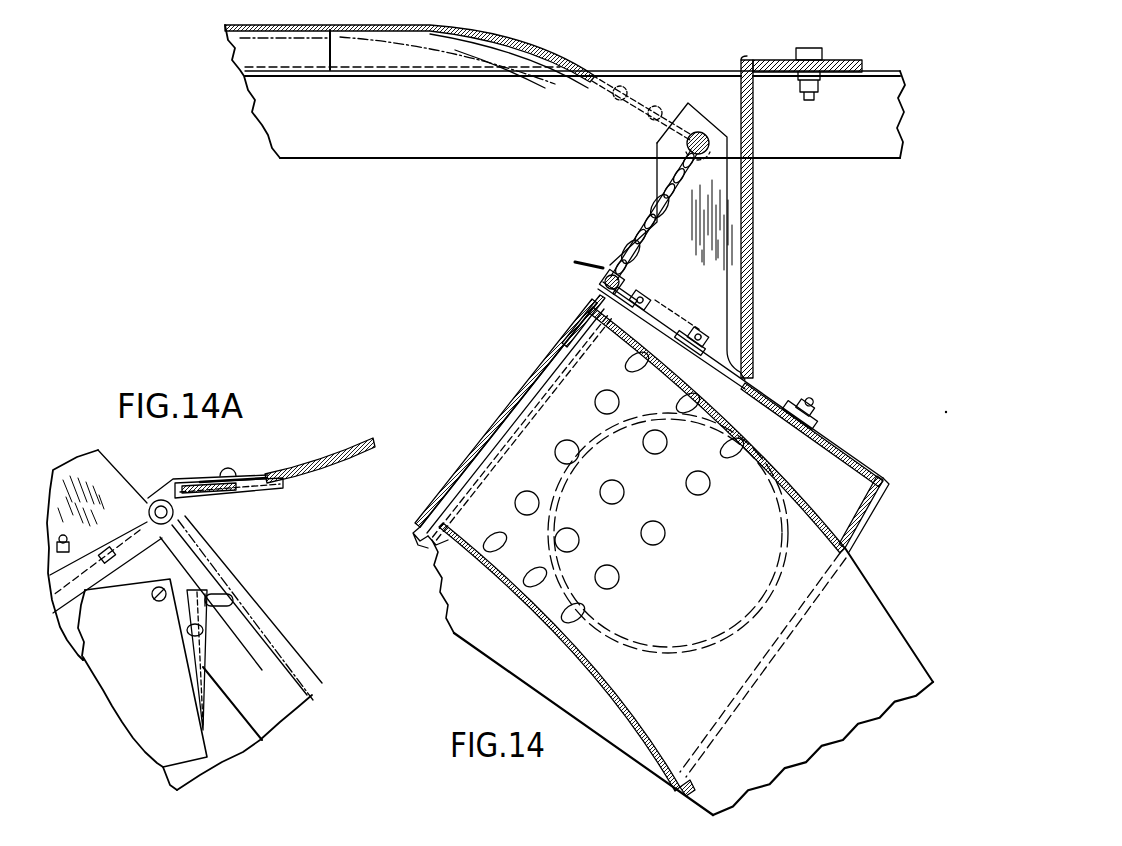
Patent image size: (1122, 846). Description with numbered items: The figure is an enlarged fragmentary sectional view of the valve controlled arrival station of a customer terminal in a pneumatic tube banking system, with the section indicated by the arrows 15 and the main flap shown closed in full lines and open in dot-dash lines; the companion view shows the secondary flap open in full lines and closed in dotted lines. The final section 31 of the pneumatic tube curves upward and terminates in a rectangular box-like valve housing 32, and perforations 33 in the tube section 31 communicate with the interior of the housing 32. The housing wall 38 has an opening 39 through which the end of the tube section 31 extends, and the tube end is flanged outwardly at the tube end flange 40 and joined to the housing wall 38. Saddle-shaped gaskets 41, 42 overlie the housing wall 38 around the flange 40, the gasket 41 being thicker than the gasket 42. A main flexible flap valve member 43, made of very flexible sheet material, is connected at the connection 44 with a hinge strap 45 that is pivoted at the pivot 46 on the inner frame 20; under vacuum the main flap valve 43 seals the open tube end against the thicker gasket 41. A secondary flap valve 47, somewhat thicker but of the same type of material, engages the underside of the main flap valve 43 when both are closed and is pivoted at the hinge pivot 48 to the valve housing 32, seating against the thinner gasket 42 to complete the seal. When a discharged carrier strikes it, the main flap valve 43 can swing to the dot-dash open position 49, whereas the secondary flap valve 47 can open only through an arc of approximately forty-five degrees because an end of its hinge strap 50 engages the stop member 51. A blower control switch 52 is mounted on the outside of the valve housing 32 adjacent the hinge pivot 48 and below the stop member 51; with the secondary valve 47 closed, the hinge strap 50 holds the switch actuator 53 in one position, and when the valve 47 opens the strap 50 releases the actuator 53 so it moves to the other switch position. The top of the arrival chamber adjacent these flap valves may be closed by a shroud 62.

In FIG. 14, the section line arrows 15 is at (742, 60).
In FIG. 14, the inner open frame structure 20 is at (369, 135).
In FIG. 14, the final section of tube 31 is at (872, 612).
In FIG. 14, the valve housing 32 is at (500, 672).
In FIG. 14A, the valve housing 32 is at (260, 713).
In FIG. 14, the perforations 33 is at (537, 493).
In FIG. 14, the housing wall 38 is at (425, 590).
In FIG. 14, the opening 39 is at (446, 542).
In FIG. 14, the tube end flange 40 is at (427, 520).
In FIG. 14, the saddle-shaped gasket 41 is at (474, 466).
In FIG. 14, the saddle-shaped gasket 42 is at (558, 336).
In FIG. 14A, the saddle-shaped gasket 42 is at (283, 683).
In FIG. 14, the main flexible flap valve member 43 is at (457, 52).
In FIG. 14, the connection 44 is at (618, 228).
In FIG. 14, the hinge strap 45 is at (624, 95).
In FIG. 14, the pivot 46 is at (710, 147).
In FIG. 14, the secondary flap valve 47 is at (505, 402).
In FIG. 14A, the secondary flap valve 47 is at (330, 458).
In FIG. 14, the hinge pivot 48 is at (615, 272).
In FIG. 14A, the hinge pivot 48 is at (156, 500).
In FIG. 14, the open position 49 is at (540, 100).
In FIG. 14, the hinge strap 50 is at (572, 330).
In FIG. 14A, the hinge strap 50 is at (258, 490).
In FIG. 14, the stop member 51 is at (580, 263).
In FIG. 14A, the stop member 51 is at (198, 480).
In FIG. 14A, the blower control switch 52 is at (143, 693).
In FIG. 14A, the switch actuator 53 is at (233, 598).
In FIG. 14, the shroud 62 is at (515, 43).